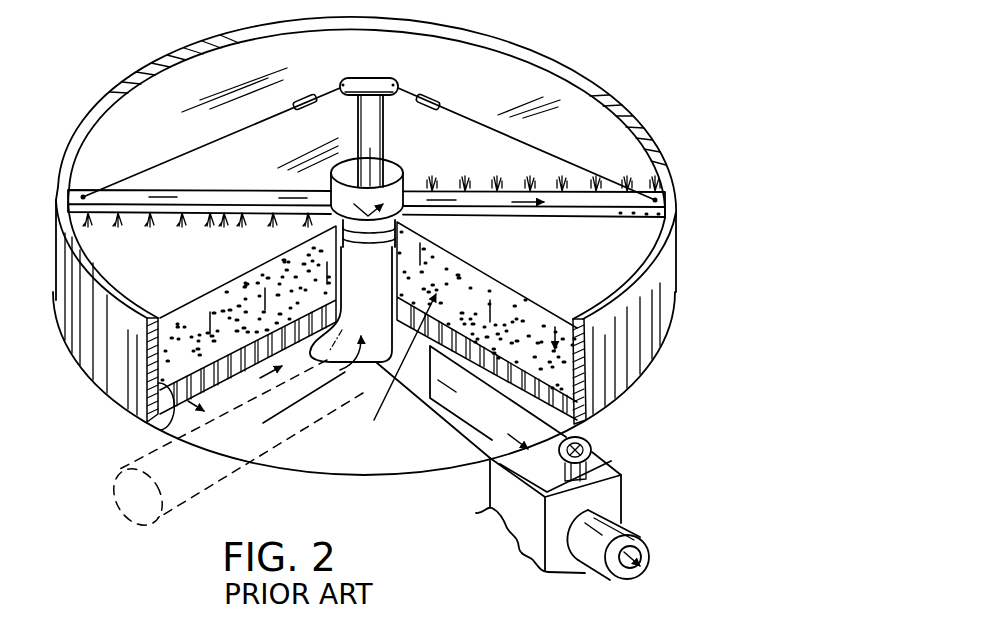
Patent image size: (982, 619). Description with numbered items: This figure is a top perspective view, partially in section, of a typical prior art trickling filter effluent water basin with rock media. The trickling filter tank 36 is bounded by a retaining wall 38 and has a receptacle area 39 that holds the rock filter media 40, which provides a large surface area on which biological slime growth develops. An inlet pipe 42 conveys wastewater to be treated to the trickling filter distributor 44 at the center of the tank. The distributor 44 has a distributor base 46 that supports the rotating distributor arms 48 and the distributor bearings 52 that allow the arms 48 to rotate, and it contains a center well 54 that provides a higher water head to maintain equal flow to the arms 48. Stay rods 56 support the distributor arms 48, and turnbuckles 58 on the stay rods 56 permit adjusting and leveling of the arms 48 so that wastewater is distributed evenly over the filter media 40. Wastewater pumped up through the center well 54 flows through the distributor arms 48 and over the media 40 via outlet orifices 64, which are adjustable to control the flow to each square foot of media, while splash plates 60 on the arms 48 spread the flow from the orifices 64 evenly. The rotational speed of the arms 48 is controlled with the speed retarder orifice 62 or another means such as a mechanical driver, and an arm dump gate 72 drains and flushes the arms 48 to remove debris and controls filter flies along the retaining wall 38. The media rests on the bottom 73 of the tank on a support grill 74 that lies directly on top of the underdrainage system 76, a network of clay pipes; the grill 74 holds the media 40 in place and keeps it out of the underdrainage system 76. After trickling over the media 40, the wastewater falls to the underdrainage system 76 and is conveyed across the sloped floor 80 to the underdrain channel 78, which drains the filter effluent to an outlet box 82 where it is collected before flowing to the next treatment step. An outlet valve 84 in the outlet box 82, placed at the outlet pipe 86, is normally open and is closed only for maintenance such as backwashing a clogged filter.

The trickling filter tank 36 is at (619, 68).
The retaining wall 38 is at (640, 372).
The receptacle area 39 is at (391, 373).
The rock filter media 40 is at (530, 325).
The inlet pipe 42 is at (224, 481).
The trickling filter distributor 44 is at (394, 163).
The distributor base 46 is at (398, 248).
The distributor arms 48 is at (228, 196).
The distributor bearings 52 is at (355, 236).
The center well 54 is at (348, 166).
The stay rods 56 is at (148, 168).
The turnbuckles 58 is at (307, 97).
The splash plates 60 is at (220, 226).
The speed retarder orifice 62 is at (634, 222).
The outlet orifices 64 is at (126, 244).
The arm dump gate 72 is at (70, 162).
The bottom 73 is at (130, 408).
The support grill 74 is at (165, 428).
The underdrainage system 76 is at (238, 372).
The underdrain channel 78 is at (477, 412).
The sloped floor 80 is at (353, 457).
The outlet box 82 is at (477, 513).
The outlet valve 84 is at (599, 444).
The outlet pipe 86 is at (626, 530).